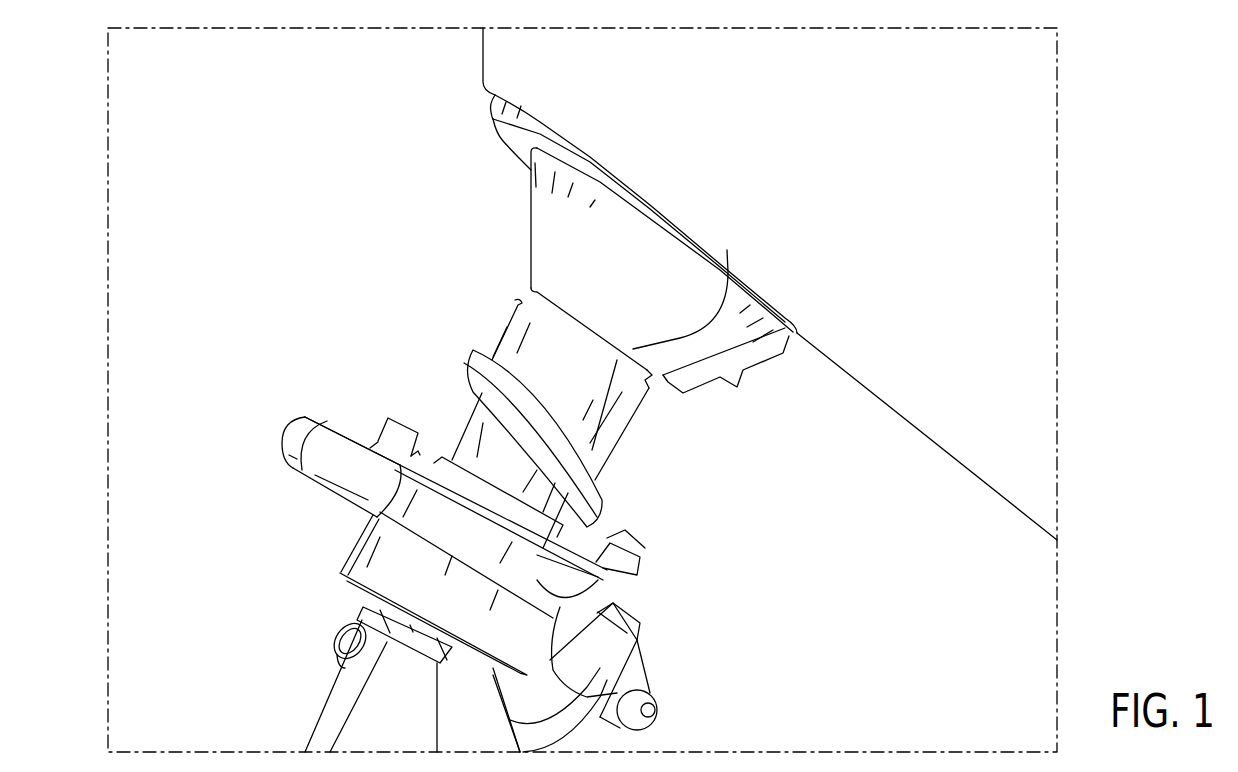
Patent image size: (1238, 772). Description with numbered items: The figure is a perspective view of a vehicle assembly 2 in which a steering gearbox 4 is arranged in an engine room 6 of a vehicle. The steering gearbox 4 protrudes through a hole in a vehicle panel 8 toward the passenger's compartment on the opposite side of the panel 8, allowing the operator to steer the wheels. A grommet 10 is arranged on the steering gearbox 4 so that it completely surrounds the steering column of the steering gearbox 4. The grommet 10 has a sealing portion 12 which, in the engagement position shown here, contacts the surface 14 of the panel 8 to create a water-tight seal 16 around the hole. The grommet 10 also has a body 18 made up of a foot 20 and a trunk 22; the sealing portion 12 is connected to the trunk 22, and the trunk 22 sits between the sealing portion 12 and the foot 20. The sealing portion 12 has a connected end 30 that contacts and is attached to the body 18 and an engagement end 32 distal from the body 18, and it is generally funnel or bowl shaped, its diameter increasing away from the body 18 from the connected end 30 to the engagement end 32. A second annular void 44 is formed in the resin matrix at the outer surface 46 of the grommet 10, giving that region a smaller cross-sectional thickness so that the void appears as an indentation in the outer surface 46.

The vehicle assembly 2 is at (365, 168).
The steering gearbox 4 is at (487, 430).
The engine room 6 is at (308, 243).
The vehicle panel 8 is at (946, 434).
The grommet 10 is at (603, 259).
The sealing portion 12 is at (735, 383).
The surface 14 is at (510, 139).
The water-tight seal 16 is at (640, 202).
The body 18 is at (505, 275).
The foot 20 is at (602, 506).
The trunk 22 is at (603, 441).
The connected end 30 is at (727, 250).
The engagement end 32 is at (697, 253).
The second annular void 44 is at (646, 382).
The outer surface 46 is at (531, 244).